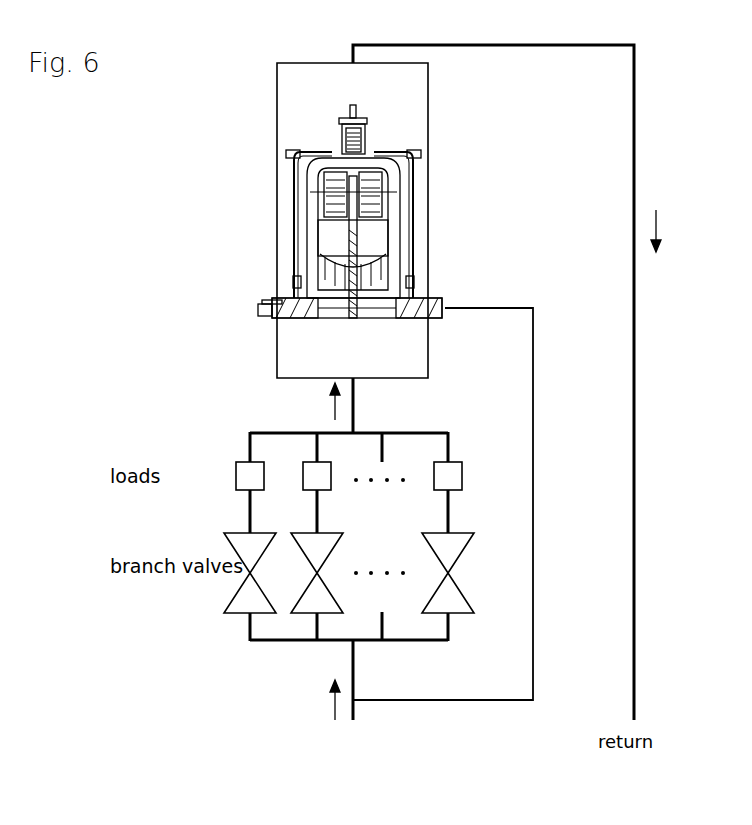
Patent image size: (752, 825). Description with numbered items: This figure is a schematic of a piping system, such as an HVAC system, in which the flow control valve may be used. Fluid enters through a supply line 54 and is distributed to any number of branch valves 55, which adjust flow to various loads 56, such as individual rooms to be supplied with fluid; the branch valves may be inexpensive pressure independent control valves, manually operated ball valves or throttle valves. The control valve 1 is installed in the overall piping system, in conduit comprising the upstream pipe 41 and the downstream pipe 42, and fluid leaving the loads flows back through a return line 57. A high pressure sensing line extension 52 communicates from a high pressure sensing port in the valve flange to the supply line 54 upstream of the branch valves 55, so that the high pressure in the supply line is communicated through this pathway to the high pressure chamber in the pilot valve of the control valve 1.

The control valve 1 is at (444, 212).
The upstream pipe 41 is at (428, 355).
The downstream pipe 42 is at (428, 95).
The high pressure sensing line extension 52 is at (533, 395).
The supply line 54 is at (355, 666).
The valves 55 is at (226, 616).
The loads 56 is at (236, 462).
The return line 57 is at (634, 357).